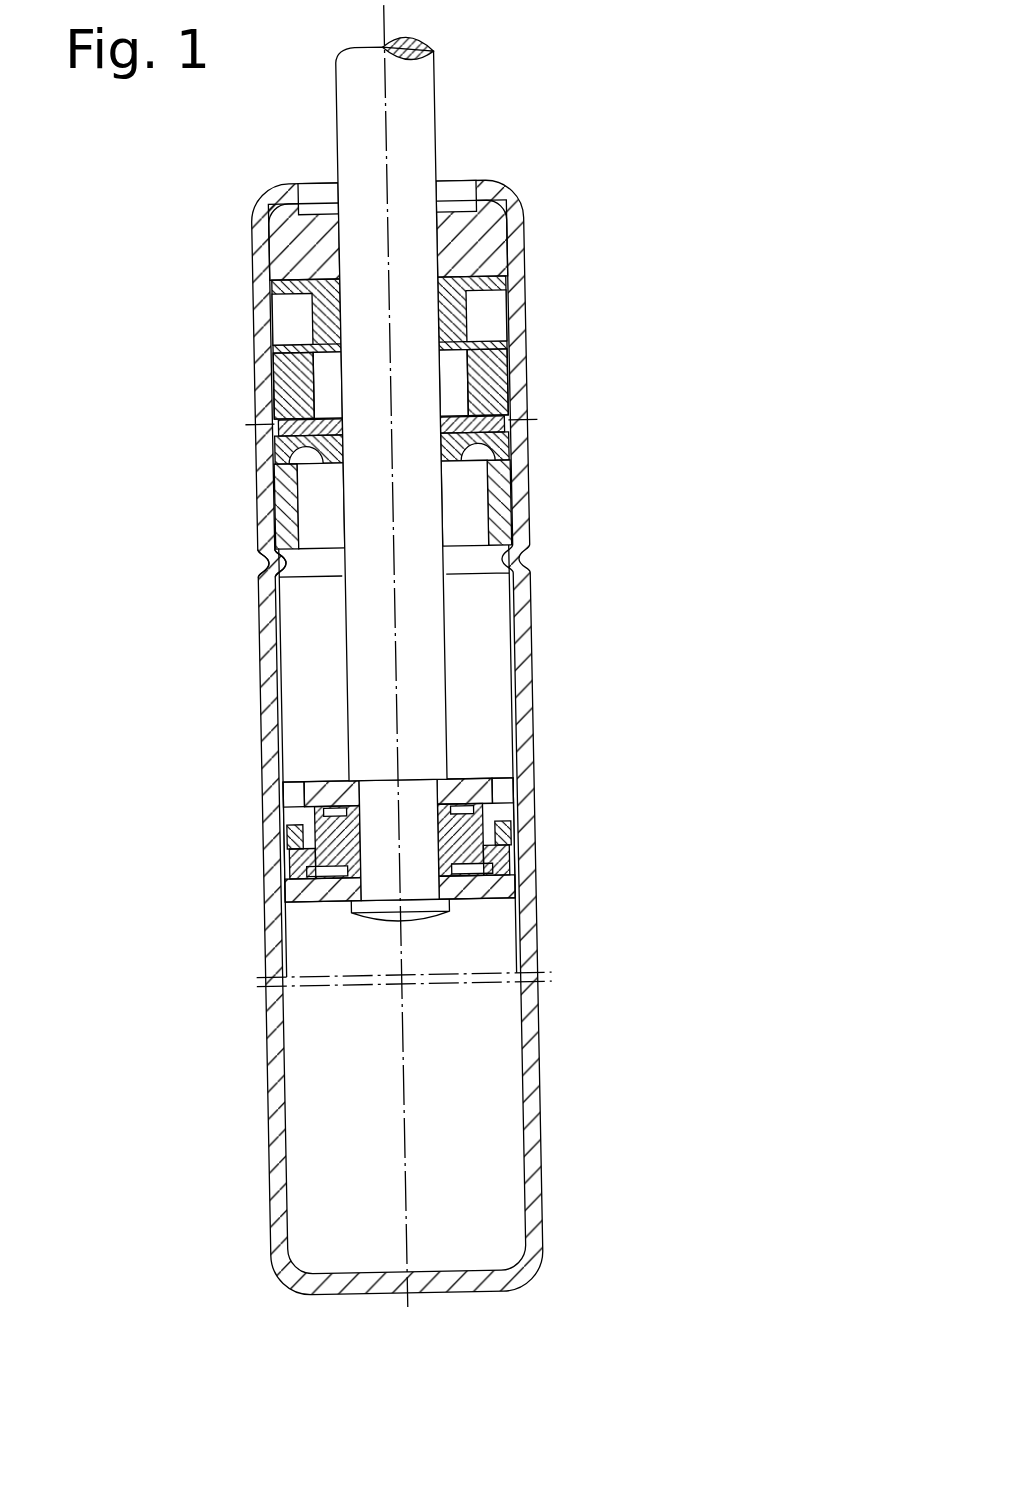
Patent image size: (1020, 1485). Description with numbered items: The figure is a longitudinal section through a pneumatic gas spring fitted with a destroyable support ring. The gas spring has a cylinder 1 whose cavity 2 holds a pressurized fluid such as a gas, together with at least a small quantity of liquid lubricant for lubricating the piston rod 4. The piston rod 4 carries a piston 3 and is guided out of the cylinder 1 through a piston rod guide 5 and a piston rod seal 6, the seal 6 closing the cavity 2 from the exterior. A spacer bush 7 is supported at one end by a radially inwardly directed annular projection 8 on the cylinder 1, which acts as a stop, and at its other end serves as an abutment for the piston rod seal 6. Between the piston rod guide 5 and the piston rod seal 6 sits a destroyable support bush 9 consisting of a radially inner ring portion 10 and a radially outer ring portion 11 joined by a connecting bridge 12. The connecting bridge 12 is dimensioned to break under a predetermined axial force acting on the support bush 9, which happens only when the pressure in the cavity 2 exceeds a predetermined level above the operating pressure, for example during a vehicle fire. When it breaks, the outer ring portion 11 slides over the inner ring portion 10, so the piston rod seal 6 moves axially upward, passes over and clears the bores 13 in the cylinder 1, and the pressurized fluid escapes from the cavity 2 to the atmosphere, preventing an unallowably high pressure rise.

The cylinder 1 is at (523, 697).
The cavity 2 is at (478, 617).
The piston 3 is at (515, 838).
The piston rod 4 is at (413, 115).
The piston rod guide 5 is at (478, 233).
The piston rod seal 6 is at (497, 443).
The spacer bush 7 is at (493, 503).
The annular projection 8 is at (262, 565).
The support bush 9 is at (490, 295).
The inner ring portion 10 is at (323, 311).
The outer ring portion 11 is at (290, 395).
The connecting bridge 12 is at (282, 362).
The bores 13 is at (257, 432).